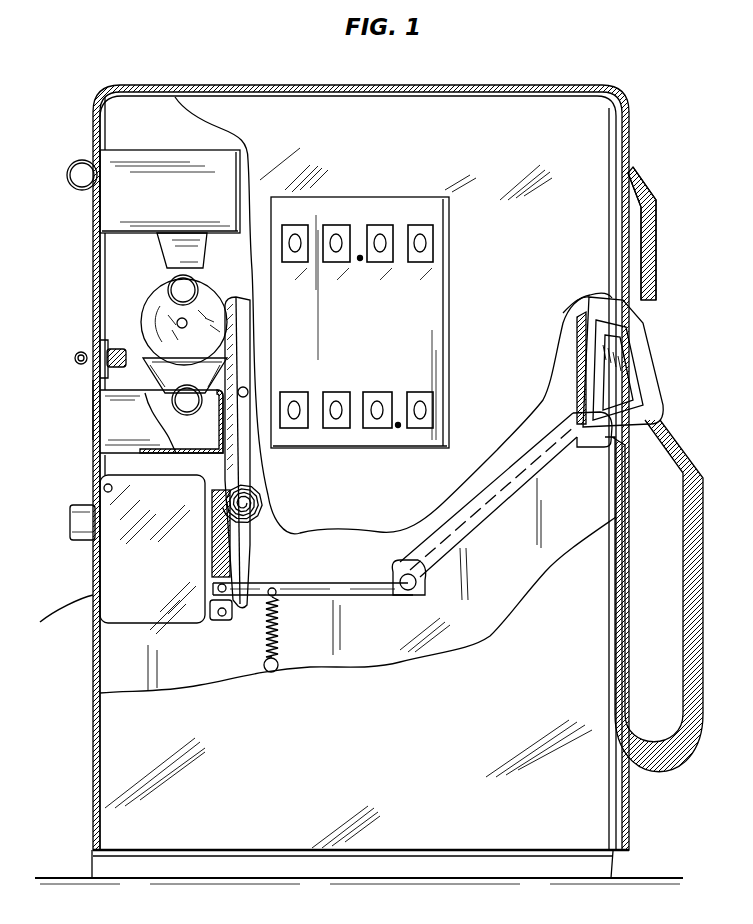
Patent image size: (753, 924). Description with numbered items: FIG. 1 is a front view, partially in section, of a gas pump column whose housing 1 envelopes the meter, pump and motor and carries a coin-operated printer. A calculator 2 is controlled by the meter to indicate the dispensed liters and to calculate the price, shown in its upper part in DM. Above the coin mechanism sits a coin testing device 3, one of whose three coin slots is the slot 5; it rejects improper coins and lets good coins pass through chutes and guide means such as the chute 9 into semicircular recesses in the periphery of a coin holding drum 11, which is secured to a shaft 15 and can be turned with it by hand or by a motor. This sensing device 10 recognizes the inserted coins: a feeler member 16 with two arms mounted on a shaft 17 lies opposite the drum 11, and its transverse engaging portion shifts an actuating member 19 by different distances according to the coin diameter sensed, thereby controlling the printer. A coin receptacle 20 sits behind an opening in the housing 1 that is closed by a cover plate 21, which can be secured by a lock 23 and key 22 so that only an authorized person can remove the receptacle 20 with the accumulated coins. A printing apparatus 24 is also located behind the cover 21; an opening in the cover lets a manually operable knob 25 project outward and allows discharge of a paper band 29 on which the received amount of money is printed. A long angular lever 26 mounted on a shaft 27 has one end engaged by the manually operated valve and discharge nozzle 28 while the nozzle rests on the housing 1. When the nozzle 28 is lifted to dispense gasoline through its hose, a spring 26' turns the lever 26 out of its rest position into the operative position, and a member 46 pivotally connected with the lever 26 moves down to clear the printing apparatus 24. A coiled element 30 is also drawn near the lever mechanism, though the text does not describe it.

The housing 1 is at (158, 85).
The calculator 2 is at (446, 284).
The coin testing device 3 is at (192, 165).
The slot 5 is at (134, 287).
The chute and guide means 9 is at (205, 258).
The device 10 is at (150, 276).
The coin holding drum 11 is at (146, 304).
The shaft 15 is at (184, 328).
The feeler member 16 is at (250, 575).
The shaft 17 is at (248, 388).
The actuating member 19 is at (219, 621).
The coin receptacle 20 is at (212, 440).
The cover plate 21 is at (92, 412).
The key 22 is at (77, 353).
The lock 23 is at (113, 349).
The printing apparatus 24 is at (130, 608).
The manually operable knob 25 is at (82, 506).
The long angular lever 26 is at (412, 503).
The spring 26' is at (294, 630).
The shaft 27 is at (418, 590).
The discharge nozzle 28 is at (640, 357).
The paper band 29 is at (48, 605).
The coil spring 30 is at (262, 500).
The member 46 is at (217, 588).